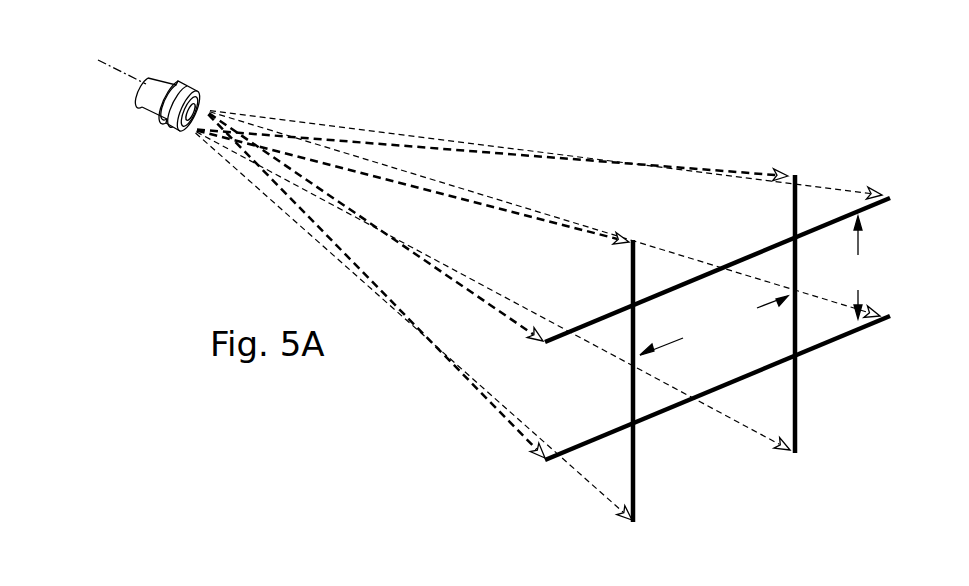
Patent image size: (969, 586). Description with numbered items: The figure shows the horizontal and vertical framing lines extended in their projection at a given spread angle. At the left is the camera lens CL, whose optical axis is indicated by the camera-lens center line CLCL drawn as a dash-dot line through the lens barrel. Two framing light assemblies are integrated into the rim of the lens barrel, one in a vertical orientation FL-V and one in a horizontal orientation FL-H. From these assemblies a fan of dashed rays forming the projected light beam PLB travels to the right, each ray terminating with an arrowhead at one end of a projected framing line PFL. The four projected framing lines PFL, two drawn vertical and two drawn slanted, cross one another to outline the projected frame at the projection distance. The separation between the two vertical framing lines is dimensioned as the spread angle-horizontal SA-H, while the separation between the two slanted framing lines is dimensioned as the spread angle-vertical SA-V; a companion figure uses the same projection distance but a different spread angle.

The camera lens CL is at (150, 112).
The camera-lens center line CLCL is at (110, 65).
The framing-light assembly vertical orientation FL-V is at (205, 104).
The framing-light assembly horizontal orientation FL-H is at (190, 133).
The projected light beam PLB is at (502, 423).
The projected framing line PFL is at (797, 412).
The spread angle-horizontal SA-H is at (714, 325).
The spread angle-vertical SA-V is at (861, 267).